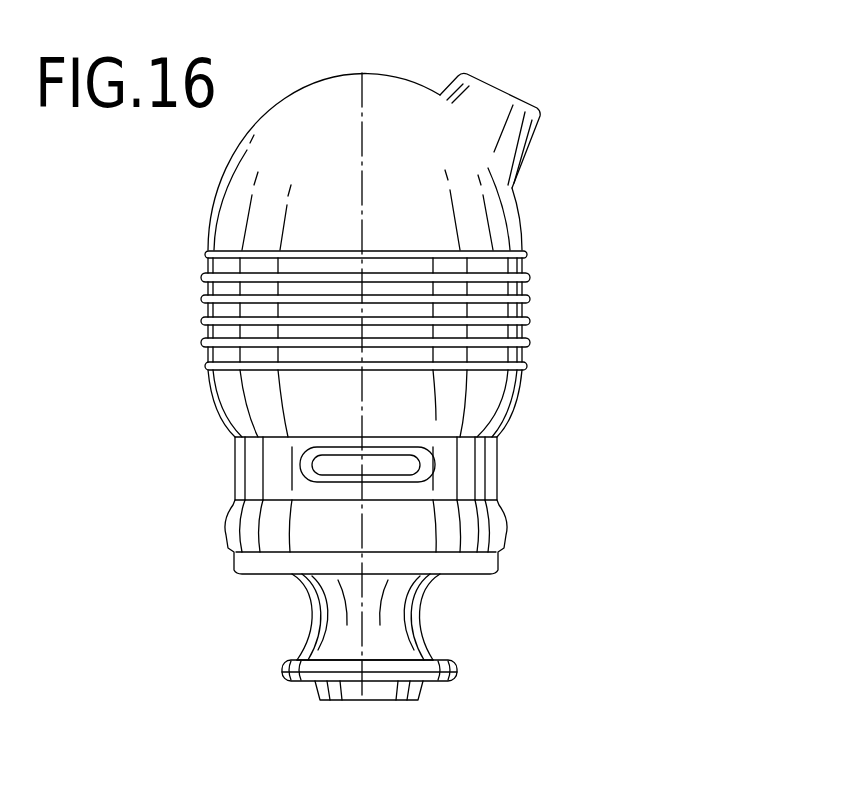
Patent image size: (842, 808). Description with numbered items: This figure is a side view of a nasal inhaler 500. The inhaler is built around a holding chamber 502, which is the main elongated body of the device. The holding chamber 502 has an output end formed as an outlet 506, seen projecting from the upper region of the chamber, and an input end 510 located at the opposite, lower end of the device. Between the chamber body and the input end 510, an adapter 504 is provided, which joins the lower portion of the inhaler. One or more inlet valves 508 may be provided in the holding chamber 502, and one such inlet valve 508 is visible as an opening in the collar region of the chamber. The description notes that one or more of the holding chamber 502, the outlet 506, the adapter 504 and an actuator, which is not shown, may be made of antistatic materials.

The nasal inhaler 500 is at (580, 167).
The holding chamber 502 is at (242, 188).
The adapter 504 is at (428, 616).
The outlet 506 is at (524, 100).
The inlet valve 508 is at (409, 463).
The input end 510 is at (312, 697).